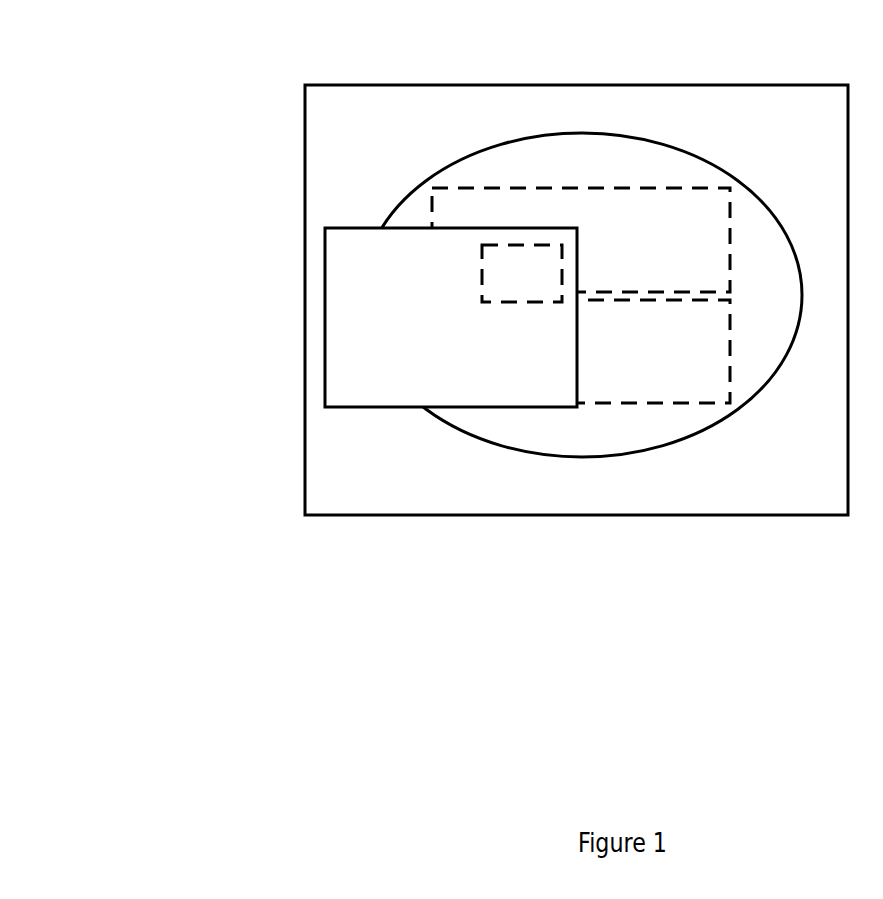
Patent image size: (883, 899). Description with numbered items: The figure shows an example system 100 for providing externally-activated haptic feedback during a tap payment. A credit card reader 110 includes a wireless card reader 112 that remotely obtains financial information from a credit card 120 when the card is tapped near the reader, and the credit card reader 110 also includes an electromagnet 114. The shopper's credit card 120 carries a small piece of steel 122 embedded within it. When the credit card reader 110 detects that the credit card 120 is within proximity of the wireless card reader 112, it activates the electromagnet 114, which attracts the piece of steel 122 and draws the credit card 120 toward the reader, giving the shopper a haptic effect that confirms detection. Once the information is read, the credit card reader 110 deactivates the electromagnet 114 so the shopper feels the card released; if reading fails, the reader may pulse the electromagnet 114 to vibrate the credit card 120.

The system 100 is at (89, 83).
The credit card reader 110 is at (303, 301).
The wireless card reader 112 is at (668, 363).
The electromagnet 114 is at (670, 253).
The credit card 120 is at (325, 375).
The piece of steel 122 is at (538, 285).